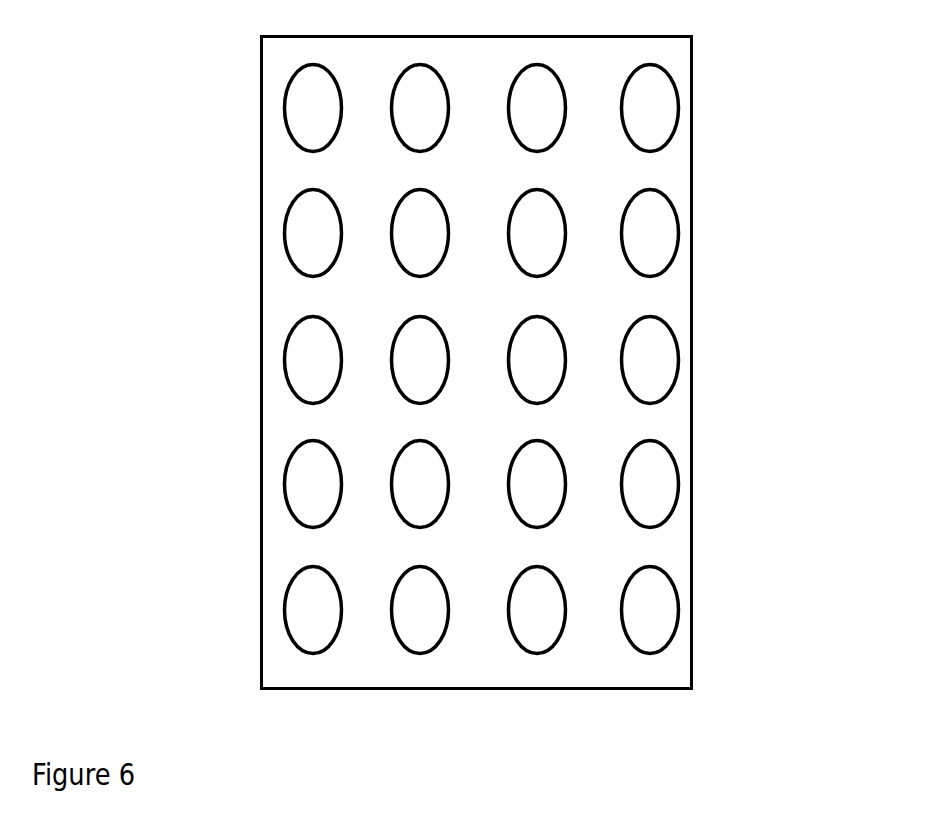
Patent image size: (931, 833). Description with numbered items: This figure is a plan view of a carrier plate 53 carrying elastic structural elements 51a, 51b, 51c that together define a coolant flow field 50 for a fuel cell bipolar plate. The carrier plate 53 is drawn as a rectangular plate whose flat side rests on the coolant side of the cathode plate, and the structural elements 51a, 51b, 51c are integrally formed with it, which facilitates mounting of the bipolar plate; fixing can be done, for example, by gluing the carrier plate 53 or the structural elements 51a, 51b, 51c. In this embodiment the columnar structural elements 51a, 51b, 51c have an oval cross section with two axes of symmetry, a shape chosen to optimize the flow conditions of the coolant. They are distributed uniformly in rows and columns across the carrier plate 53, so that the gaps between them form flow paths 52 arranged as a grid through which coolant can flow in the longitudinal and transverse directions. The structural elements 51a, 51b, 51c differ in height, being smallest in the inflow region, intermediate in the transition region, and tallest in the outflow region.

The coolant flow field 50 is at (480, 636).
The structural element 51a is at (653, 112).
The structural element 51b is at (667, 363).
The structural element 51c is at (660, 615).
The flow path 52 is at (371, 647).
The carrier plate 53 is at (693, 63).